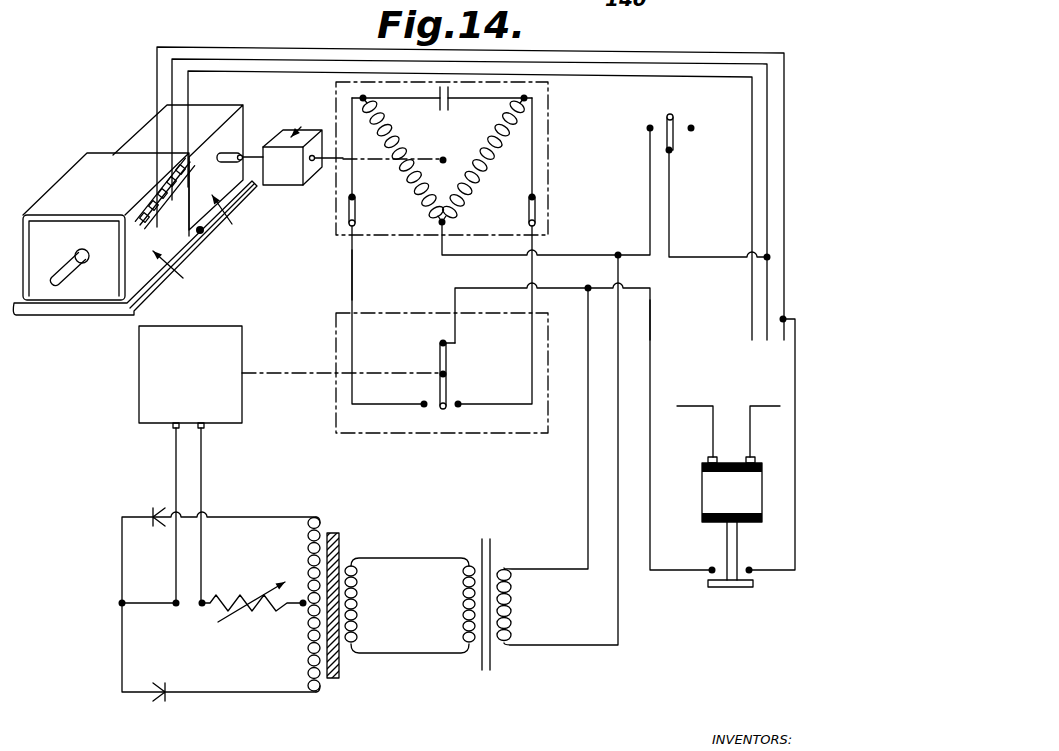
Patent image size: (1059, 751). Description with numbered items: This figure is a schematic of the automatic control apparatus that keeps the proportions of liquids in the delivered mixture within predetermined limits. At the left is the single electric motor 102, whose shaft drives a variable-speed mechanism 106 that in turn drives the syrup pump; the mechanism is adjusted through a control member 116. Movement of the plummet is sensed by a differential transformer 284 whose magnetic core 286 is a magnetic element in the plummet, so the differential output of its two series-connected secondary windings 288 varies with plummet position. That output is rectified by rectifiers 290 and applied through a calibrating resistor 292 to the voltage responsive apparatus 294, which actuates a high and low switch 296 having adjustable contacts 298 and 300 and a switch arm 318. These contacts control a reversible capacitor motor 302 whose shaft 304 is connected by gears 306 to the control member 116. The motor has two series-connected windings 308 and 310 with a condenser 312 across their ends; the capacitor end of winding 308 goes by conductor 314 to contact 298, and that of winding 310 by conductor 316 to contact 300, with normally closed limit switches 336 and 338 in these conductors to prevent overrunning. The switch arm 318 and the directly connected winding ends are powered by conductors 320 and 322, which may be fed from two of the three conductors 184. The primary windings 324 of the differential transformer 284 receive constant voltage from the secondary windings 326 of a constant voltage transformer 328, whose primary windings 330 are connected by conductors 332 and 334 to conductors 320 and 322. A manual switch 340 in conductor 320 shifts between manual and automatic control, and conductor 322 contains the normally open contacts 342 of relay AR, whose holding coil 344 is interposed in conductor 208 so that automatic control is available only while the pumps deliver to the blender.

The electric motor 102 is at (73, 181).
The variable-speed mechanism 106 is at (136, 141).
The control member 116 is at (234, 150).
The conductors 184 is at (784, 205).
The conductor 208 is at (781, 394).
The differential transformer 284 is at (336, 684).
The magnetic core 286 is at (334, 532).
The secondary windings 288 is at (310, 662).
The rectifiers 290 is at (160, 488).
The calibrating resistor 292 is at (270, 612).
The voltage responsive apparatus 294 is at (139, 358).
The high and low switch 296 is at (335, 338).
The adjustable contact 298 is at (424, 408).
The adjustable contact 300 is at (460, 408).
The reversible capacitor motor 302 is at (336, 84).
The motor shaft 304 is at (333, 186).
The gears 306 is at (285, 180).
The motor winding 308 is at (410, 168).
The motor winding 310 is at (490, 160).
The condenser 312 is at (450, 108).
The conductor 314 is at (354, 288).
The conductor 316 is at (530, 268).
The switch arm 318 is at (440, 360).
The conductor 320 is at (562, 255).
The conductor 322 is at (650, 333).
The primary windings 324 is at (360, 598).
The secondary windings 326 is at (462, 615).
The constant voltage transformer 328 is at (485, 680).
The primary windings 330 is at (514, 610).
The conductor 332 is at (619, 585).
The conductor 334 is at (588, 485).
The limit switch 336 is at (356, 212).
The limit switch 338 is at (528, 215).
The manual switch 340 is at (668, 118).
The relay contacts 342 is at (710, 575).
The holding coil 344 is at (702, 490).